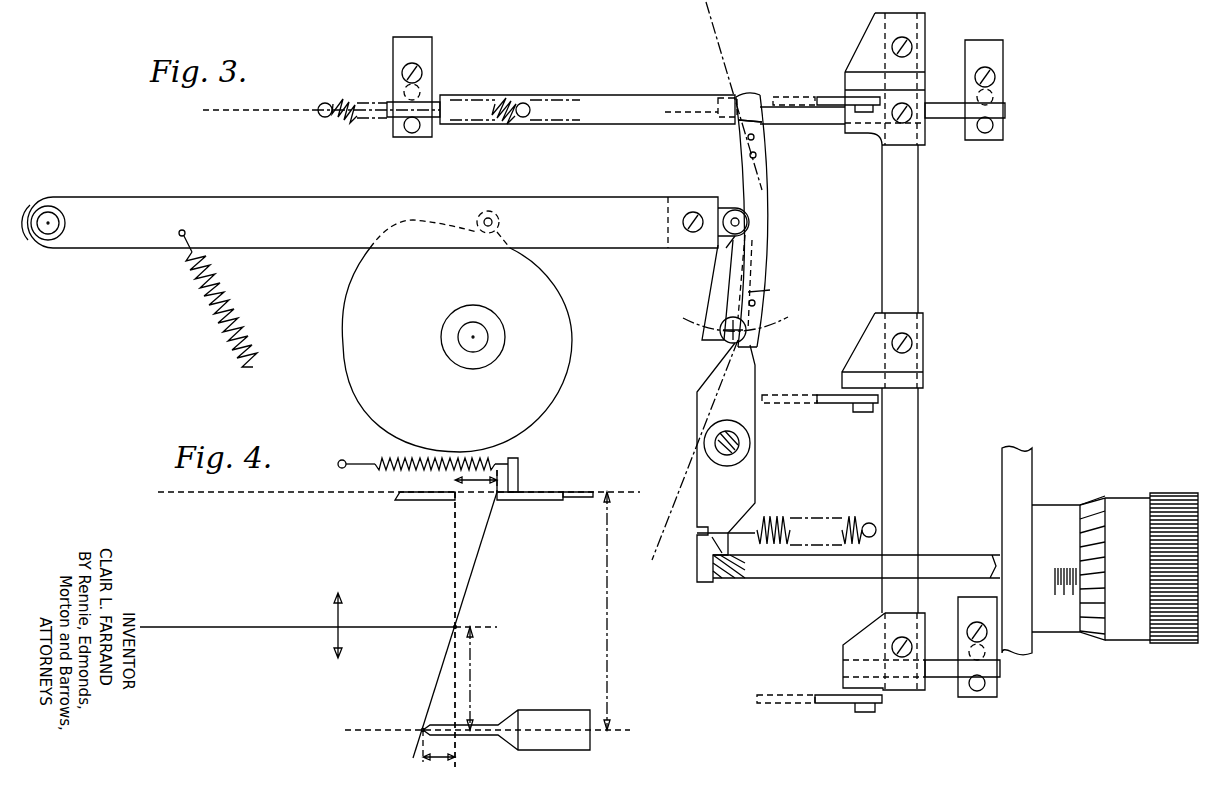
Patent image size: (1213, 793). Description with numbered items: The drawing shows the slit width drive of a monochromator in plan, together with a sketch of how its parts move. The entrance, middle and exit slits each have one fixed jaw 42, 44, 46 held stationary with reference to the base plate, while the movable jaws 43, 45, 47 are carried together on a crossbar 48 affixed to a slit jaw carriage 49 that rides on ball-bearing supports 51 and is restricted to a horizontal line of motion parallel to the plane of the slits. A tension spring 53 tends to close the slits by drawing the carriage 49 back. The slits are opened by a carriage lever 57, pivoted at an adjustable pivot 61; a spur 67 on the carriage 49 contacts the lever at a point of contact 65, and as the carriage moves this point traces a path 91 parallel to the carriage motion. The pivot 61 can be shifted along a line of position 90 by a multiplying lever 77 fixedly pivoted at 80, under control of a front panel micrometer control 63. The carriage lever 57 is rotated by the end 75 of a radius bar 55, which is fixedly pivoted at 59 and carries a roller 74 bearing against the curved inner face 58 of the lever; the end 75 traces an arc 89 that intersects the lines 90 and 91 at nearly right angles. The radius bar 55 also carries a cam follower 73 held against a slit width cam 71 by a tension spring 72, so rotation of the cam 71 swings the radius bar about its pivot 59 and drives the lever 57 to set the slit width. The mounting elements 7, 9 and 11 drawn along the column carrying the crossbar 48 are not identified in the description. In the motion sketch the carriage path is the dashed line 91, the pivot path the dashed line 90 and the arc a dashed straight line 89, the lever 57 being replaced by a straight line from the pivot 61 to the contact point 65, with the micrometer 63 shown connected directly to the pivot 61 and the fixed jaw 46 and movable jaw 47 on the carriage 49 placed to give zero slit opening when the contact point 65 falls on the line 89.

In FIG. 3, the lower bracket 7 is at (818, 690).
In FIG. 3, the middle bracket 9 is at (816, 393).
In FIG. 3, the upper bracket 11 is at (826, 98).
In FIG. 3, the fixed jaw 42 is at (783, 703).
In FIG. 3, the movable jaw 43 is at (840, 703).
In FIG. 3, the fixed jaw 44 is at (800, 403).
In FIG. 3, the movable jaw 45 is at (842, 403).
In FIG. 3, the fixed jaw 46 is at (786, 97).
In FIG. 4, the fixed jaw 46 is at (410, 500).
In FIG. 3, the movable jaw 47 is at (832, 94).
In FIG. 4, the movable jaw 47 is at (535, 500).
In FIG. 3, the crossbar 48 is at (920, 283).
In FIG. 3, the slit jaw carriage 49 is at (580, 95).
In FIG. 4, the slit jaw carriage 49 is at (580, 500).
In FIG. 3, the ball-bearing supports 51 is at (432, 100).
In FIG. 3, the tension spring 53 is at (340, 104).
In FIG. 4, the tension spring 53 is at (390, 458).
In FIG. 3, the radius bar 55 is at (262, 197).
In FIG. 4, the radius bar 55 is at (240, 625).
In FIG. 3, the carriage lever 57 is at (770, 208).
In FIG. 4, the carriage lever 57 is at (488, 556).
In FIG. 3, the inner face 58 is at (765, 182).
In FIG. 3, the pivot 59 is at (52, 200).
In FIG. 3, the pivot 61 is at (722, 338).
In FIG. 4, the pivot 61 is at (415, 733).
In FIG. 3, the micrometer control 63 is at (1133, 500).
In FIG. 4, the micrometer control 63 is at (546, 710).
In FIG. 3, the point of contact 65 is at (740, 100).
In FIG. 4, the point of contact 65 is at (497, 495).
In FIG. 3, the spur 67 is at (790, 112).
In FIG. 3, the slit width cam 71 is at (570, 310).
In FIG. 3, the tension spring 72 is at (215, 312).
In FIG. 3, the cam follower 73 is at (500, 210).
In FIG. 3, the roller 74 is at (729, 251).
In FIG. 3, the end of radius bar 75 is at (734, 210).
In FIG. 4, the end of radius bar 75 is at (452, 625).
In FIG. 3, the multiplying lever 77 is at (715, 278).
In FIG. 3, the pivot 80 is at (720, 208).
In FIG. 3, the arc 89 is at (700, 402).
In FIG. 4, the arc 89 is at (452, 555).
In FIG. 3, the line of position 90 is at (770, 332).
In FIG. 4, the line of position 90 is at (362, 725).
In FIG. 3, the path 91 is at (290, 110).
In FIG. 4, the path 91 is at (327, 496).